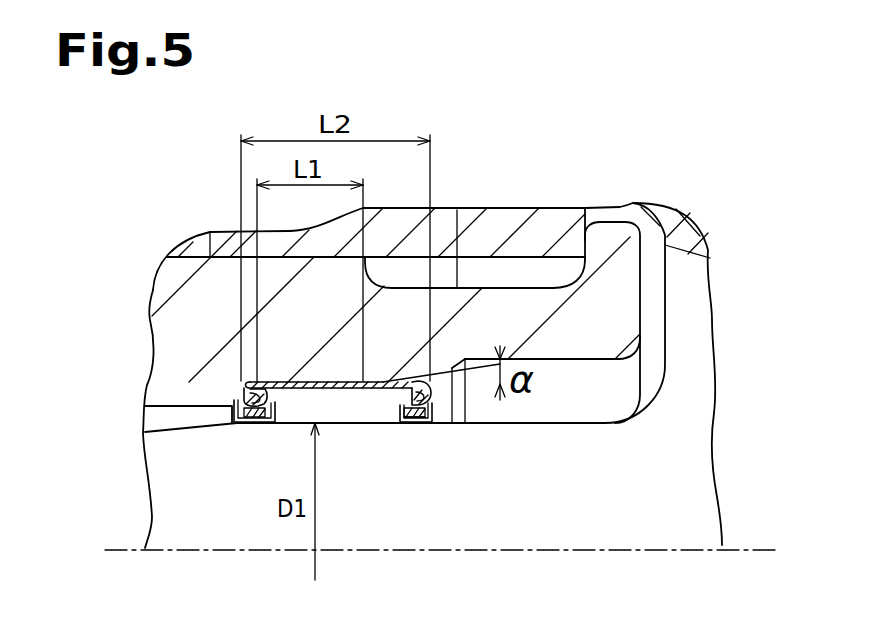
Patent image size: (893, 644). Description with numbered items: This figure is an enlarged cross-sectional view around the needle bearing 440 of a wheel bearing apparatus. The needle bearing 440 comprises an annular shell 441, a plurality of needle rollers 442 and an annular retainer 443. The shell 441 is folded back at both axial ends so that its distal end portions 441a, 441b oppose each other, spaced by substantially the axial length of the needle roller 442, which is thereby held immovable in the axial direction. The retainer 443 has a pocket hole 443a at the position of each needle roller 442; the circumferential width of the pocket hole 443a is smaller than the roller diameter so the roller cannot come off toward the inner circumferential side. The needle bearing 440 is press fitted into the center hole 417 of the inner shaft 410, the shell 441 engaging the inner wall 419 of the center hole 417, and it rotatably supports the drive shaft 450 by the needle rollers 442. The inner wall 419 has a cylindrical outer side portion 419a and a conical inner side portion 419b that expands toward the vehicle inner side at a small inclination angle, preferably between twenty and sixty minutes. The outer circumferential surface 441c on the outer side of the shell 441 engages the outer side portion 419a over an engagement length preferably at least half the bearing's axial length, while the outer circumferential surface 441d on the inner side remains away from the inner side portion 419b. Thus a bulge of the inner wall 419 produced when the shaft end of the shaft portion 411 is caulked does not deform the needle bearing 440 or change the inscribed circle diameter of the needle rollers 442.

The inner shaft 410 is at (135, 345).
The shaft portion 411 is at (163, 297).
The center hole 417 is at (587, 362).
The inner wall 419 is at (425, 492).
The outer side portion 419a is at (318, 390).
The inner side portion 419b is at (383, 390).
The needle bearing 440 is at (558, 508).
The shell 441 is at (464, 407).
The distal end portion 441a is at (400, 405).
The distal end portion 441b is at (275, 420).
The outer circumferential surface 441c is at (277, 382).
The outer circumferential surface 441d is at (408, 381).
The needle roller 442 is at (296, 415).
The retainer 443 is at (413, 423).
The pocket hole 443a is at (396, 424).
The drive shaft 450 is at (705, 373).